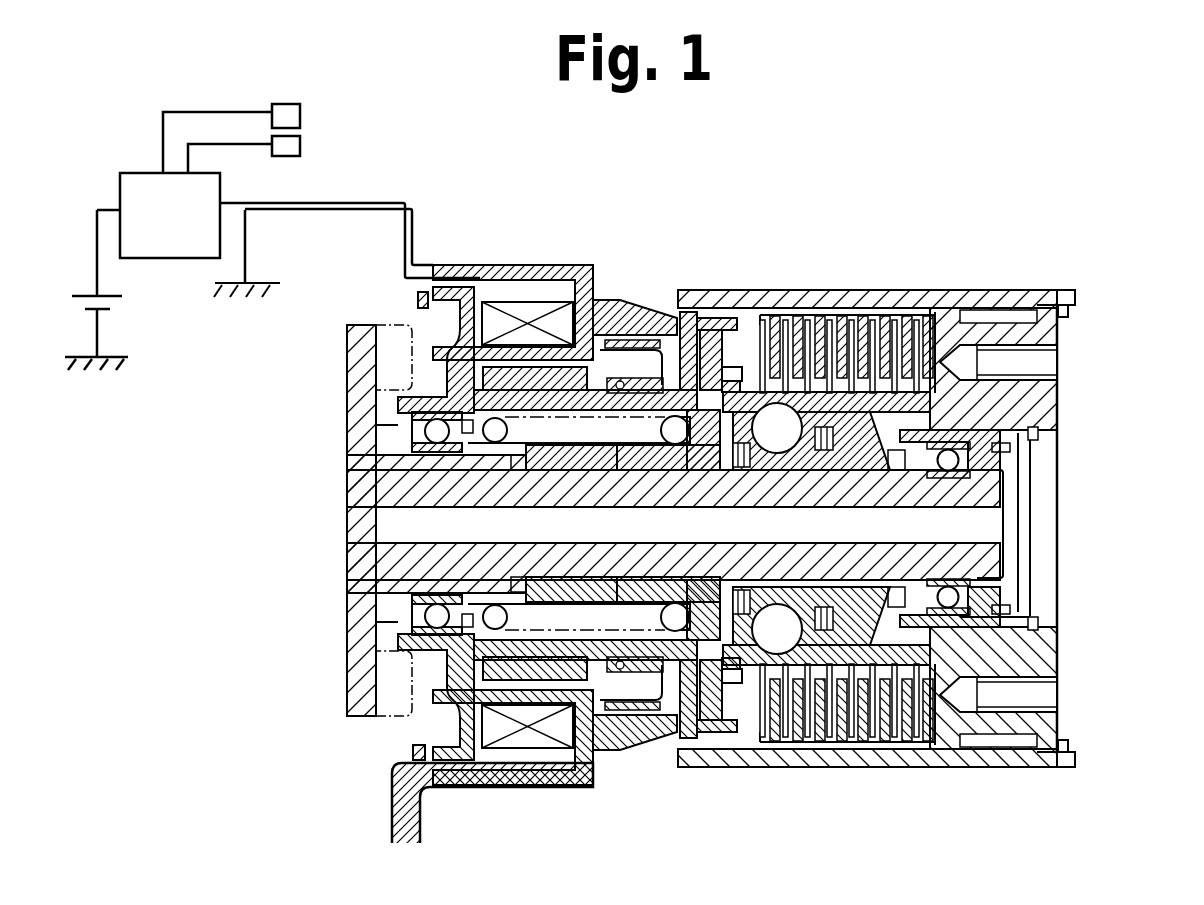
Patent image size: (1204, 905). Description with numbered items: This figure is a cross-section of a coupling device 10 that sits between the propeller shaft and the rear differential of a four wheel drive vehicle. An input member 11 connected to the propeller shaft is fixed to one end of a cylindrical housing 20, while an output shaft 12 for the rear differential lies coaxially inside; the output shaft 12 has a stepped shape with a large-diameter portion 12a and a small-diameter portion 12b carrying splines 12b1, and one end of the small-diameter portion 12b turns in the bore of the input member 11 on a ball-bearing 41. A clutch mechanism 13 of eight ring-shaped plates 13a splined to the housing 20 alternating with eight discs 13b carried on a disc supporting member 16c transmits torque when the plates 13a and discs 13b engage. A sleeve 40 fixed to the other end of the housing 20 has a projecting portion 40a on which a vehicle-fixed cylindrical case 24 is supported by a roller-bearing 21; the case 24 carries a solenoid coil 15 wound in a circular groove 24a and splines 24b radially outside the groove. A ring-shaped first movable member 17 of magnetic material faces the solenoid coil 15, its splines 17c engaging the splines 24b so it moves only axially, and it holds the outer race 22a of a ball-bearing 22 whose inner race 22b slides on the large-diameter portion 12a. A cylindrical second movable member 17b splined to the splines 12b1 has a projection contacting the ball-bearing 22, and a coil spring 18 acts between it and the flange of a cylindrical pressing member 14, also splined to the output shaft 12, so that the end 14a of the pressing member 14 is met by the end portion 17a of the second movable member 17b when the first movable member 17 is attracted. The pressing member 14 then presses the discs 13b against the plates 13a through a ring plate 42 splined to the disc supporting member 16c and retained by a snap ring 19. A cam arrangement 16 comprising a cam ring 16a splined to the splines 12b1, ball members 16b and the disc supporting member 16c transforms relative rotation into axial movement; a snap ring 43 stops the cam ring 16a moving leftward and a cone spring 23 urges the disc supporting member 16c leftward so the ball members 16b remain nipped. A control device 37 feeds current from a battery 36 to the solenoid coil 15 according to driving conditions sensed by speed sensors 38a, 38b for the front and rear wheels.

The coupling device 10 is at (803, 165).
The input member 11 is at (1063, 392).
The output shaft 12 is at (375, 568).
The large-diameter portion 12a is at (415, 582).
The small-diameter portion 12b is at (846, 655).
The splines 12b1 is at (935, 760).
The clutch mechanism 13 is at (897, 288).
The plates 13a is at (785, 335).
The discs 13b is at (850, 335).
The pressing member 14 is at (705, 335).
The other end of pressing member 14a is at (650, 700).
The solenoid coil 15 is at (520, 300).
The cam arrangement 16 is at (930, 490).
The cam ring 16a is at (792, 720).
The ball members 16b is at (690, 330).
The disc supporting member 16c is at (990, 480).
The first movable member 17 is at (452, 332).
The end portion of second movable member 17a is at (570, 462).
The second movable member 17b is at (560, 472).
The splines 17c is at (470, 300).
The coil spring 18 is at (560, 410).
The snap ring 19 is at (745, 360).
The housing 20 is at (940, 300).
The roller-bearing 21 is at (522, 378).
The ball-bearing 22 is at (403, 432).
The outer race 22a is at (406, 392).
The inner race 22b is at (420, 450).
The cone spring 23 is at (965, 462).
The case 24 is at (420, 245).
The circular groove 24a is at (562, 750).
The splines 24b is at (413, 754).
The battery 36 is at (95, 292).
The control device 37 is at (132, 192).
The speed sensor 38a is at (292, 110).
The speed sensor 38b is at (295, 146).
The sleeve 40 is at (728, 745).
The projecting portion 40a is at (592, 700).
The ball-bearing 41 is at (965, 622).
The ring plate 42 is at (745, 700).
The snap ring 43 is at (700, 700).